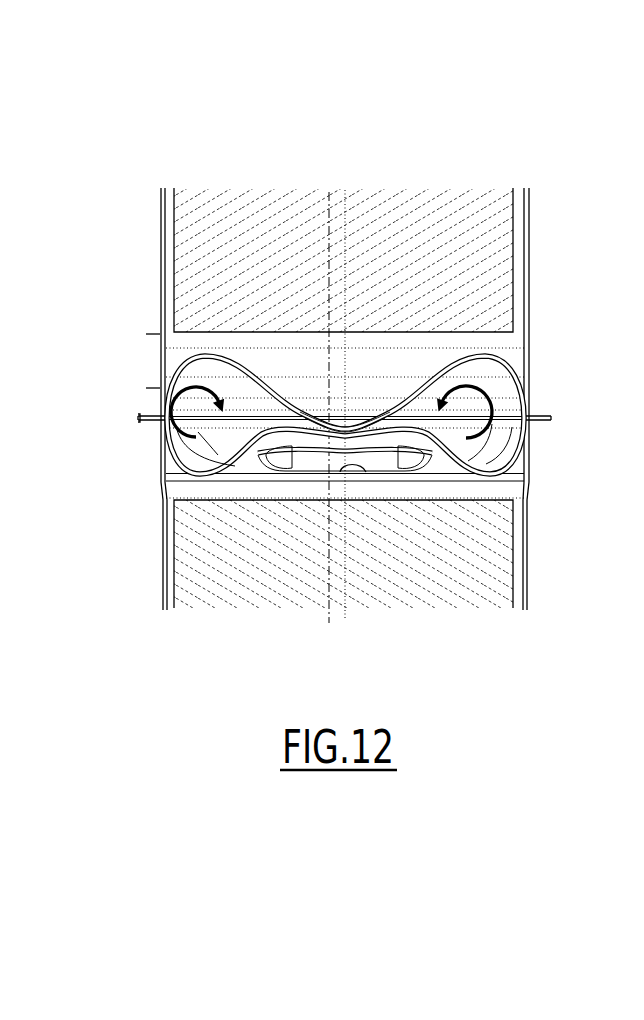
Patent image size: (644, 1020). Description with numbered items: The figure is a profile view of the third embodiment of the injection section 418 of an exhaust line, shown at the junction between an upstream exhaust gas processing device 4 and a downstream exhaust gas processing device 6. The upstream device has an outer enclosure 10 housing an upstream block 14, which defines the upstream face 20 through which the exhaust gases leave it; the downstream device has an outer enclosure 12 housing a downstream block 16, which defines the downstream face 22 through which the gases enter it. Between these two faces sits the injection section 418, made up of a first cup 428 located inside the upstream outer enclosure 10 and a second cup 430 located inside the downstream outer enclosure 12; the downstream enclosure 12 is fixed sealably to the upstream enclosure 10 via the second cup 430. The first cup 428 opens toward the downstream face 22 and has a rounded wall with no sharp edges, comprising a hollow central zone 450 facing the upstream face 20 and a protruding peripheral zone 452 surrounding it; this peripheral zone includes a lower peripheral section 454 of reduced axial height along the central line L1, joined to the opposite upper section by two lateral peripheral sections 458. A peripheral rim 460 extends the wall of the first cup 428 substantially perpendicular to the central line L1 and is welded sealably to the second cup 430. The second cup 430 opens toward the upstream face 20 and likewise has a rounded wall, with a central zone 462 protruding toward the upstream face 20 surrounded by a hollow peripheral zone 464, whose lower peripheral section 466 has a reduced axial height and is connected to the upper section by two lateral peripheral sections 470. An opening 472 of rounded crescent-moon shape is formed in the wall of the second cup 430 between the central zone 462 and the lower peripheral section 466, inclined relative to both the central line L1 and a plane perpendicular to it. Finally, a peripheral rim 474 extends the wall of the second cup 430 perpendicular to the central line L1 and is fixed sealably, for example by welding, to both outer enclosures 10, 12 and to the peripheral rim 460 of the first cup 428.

The upstream exhaust gas processing device 4 is at (548, 238).
The downstream exhaust gas processing device 6 is at (548, 556).
The upstream outer enclosure 10 is at (513, 278).
The downstream outer enclosure 12 is at (513, 525).
The upstream block 14 is at (498, 211).
The downstream block 16 is at (500, 598).
The upstream face 20 is at (217, 332).
The downstream face 22 is at (198, 500).
The injection section 418 is at (554, 364).
The first cup 428 is at (166, 353).
The second cup 430 is at (160, 452).
The hollow central zone 450 is at (303, 421).
The peripheral zone 452 is at (382, 378).
The lower peripheral section 454 is at (416, 378).
The lateral peripheral sections 458 is at (197, 352).
The peripheral rim 460 is at (144, 414).
The central zone 462 is at (303, 441).
The hollow peripheral zone 464 is at (429, 462).
The lower peripheral section 466 is at (232, 463).
The lateral peripheral sections 470 is at (180, 478).
The opening 472 is at (356, 472).
The peripheral rim 474 is at (124, 421).
The central line L1 is at (331, 216).